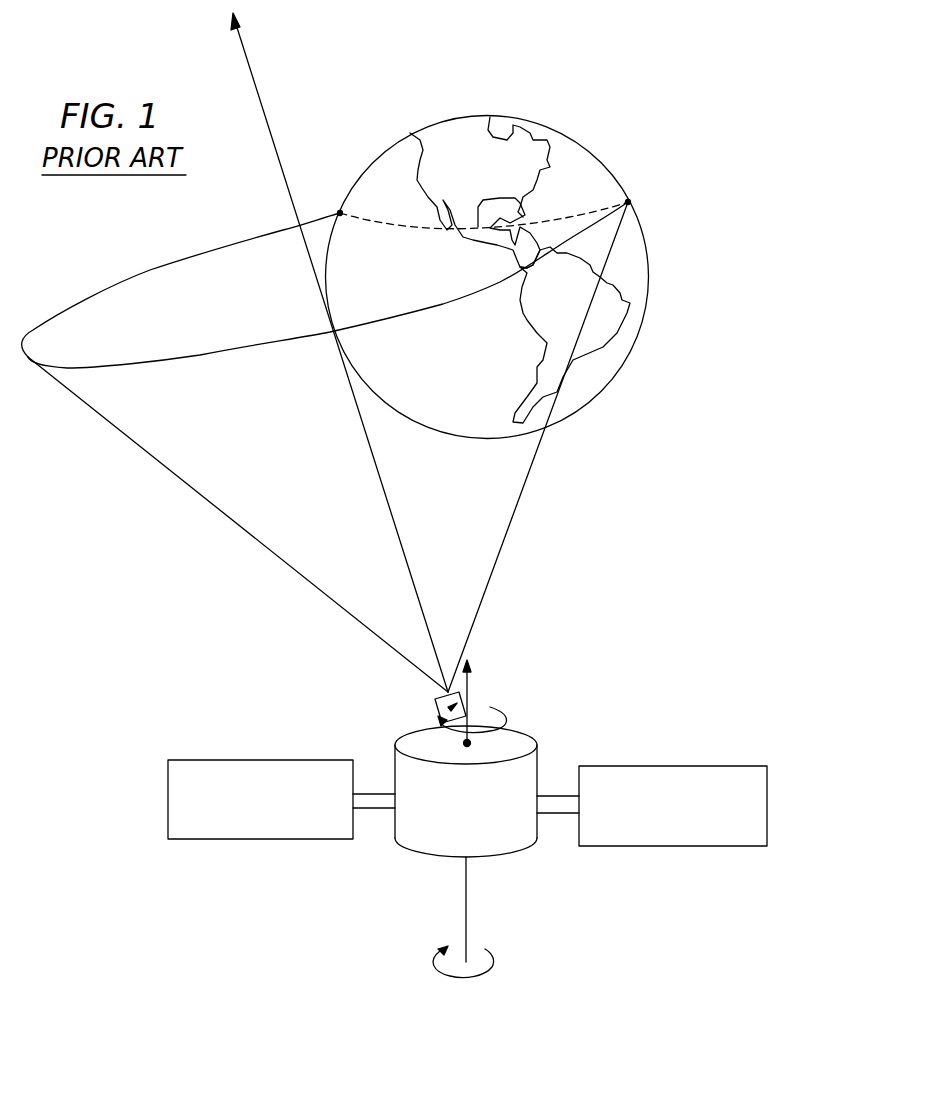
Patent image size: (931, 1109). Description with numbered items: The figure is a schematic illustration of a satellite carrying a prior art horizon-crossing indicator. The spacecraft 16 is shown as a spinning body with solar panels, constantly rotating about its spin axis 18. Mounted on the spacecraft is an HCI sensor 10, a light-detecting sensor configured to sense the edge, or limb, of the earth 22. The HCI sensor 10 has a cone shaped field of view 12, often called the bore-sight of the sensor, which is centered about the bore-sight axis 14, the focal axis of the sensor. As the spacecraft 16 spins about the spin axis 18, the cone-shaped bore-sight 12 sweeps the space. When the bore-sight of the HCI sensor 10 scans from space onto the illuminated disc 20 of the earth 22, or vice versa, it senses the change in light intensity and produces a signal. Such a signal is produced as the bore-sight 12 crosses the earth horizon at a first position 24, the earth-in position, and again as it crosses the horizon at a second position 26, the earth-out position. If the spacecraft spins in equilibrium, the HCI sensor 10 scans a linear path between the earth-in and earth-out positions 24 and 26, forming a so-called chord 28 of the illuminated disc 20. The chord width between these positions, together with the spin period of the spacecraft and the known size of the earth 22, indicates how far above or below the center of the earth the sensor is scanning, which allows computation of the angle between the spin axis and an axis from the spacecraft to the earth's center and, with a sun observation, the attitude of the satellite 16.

The HCI sensor 10 is at (430, 712).
The cone shaped field of view 12 is at (518, 500).
The bore-sight axis 14 is at (264, 117).
The spacecraft 16 is at (579, 891).
The spin axis 18 is at (467, 882).
The illuminated disc 20 is at (588, 150).
The earth 22 is at (527, 165).
The first position 24 is at (338, 210).
The second position 26 is at (632, 199).
The chord 28 is at (423, 229).